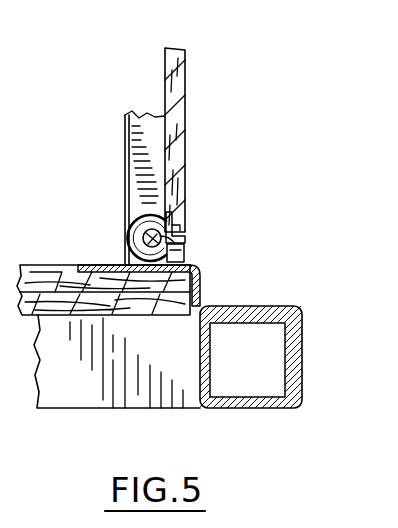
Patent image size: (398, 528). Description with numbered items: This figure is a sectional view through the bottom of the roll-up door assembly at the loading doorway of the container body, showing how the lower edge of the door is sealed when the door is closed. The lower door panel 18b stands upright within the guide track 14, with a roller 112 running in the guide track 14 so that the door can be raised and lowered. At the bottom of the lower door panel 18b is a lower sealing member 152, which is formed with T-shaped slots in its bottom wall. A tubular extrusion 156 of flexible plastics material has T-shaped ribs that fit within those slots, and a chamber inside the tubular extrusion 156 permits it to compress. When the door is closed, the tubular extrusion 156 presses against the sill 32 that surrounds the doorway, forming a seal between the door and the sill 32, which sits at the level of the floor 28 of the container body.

The lower door panel 18b is at (186, 69).
The guide track 14 is at (123, 144).
The roller 112 is at (127, 206).
The lower sealing member 152 is at (184, 229).
The tubular extrusion 156 is at (185, 252).
The floor 28 is at (35, 263).
The sill 32 is at (199, 282).